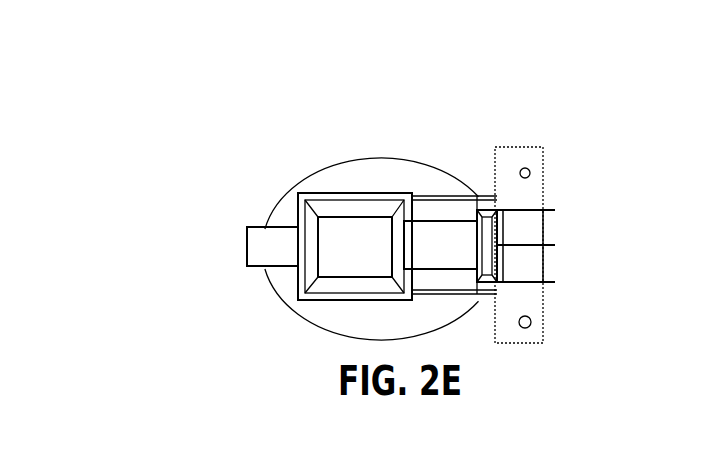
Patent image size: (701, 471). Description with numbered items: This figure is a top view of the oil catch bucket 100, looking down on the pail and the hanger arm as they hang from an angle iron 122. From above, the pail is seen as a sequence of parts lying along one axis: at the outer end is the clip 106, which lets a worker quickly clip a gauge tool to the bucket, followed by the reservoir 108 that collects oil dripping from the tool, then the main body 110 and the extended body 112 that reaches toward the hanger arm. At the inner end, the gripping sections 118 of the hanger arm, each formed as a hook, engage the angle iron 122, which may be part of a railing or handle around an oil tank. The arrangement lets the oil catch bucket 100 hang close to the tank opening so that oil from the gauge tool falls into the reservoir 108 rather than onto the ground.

The oil catch bucket 100 is at (220, 134).
The clip 106 is at (282, 253).
The reservoir 108 is at (340, 238).
The main body 110 is at (375, 195).
The extended body 112 is at (440, 197).
The gripping sections 118 is at (500, 225).
The angle iron 122 is at (533, 303).